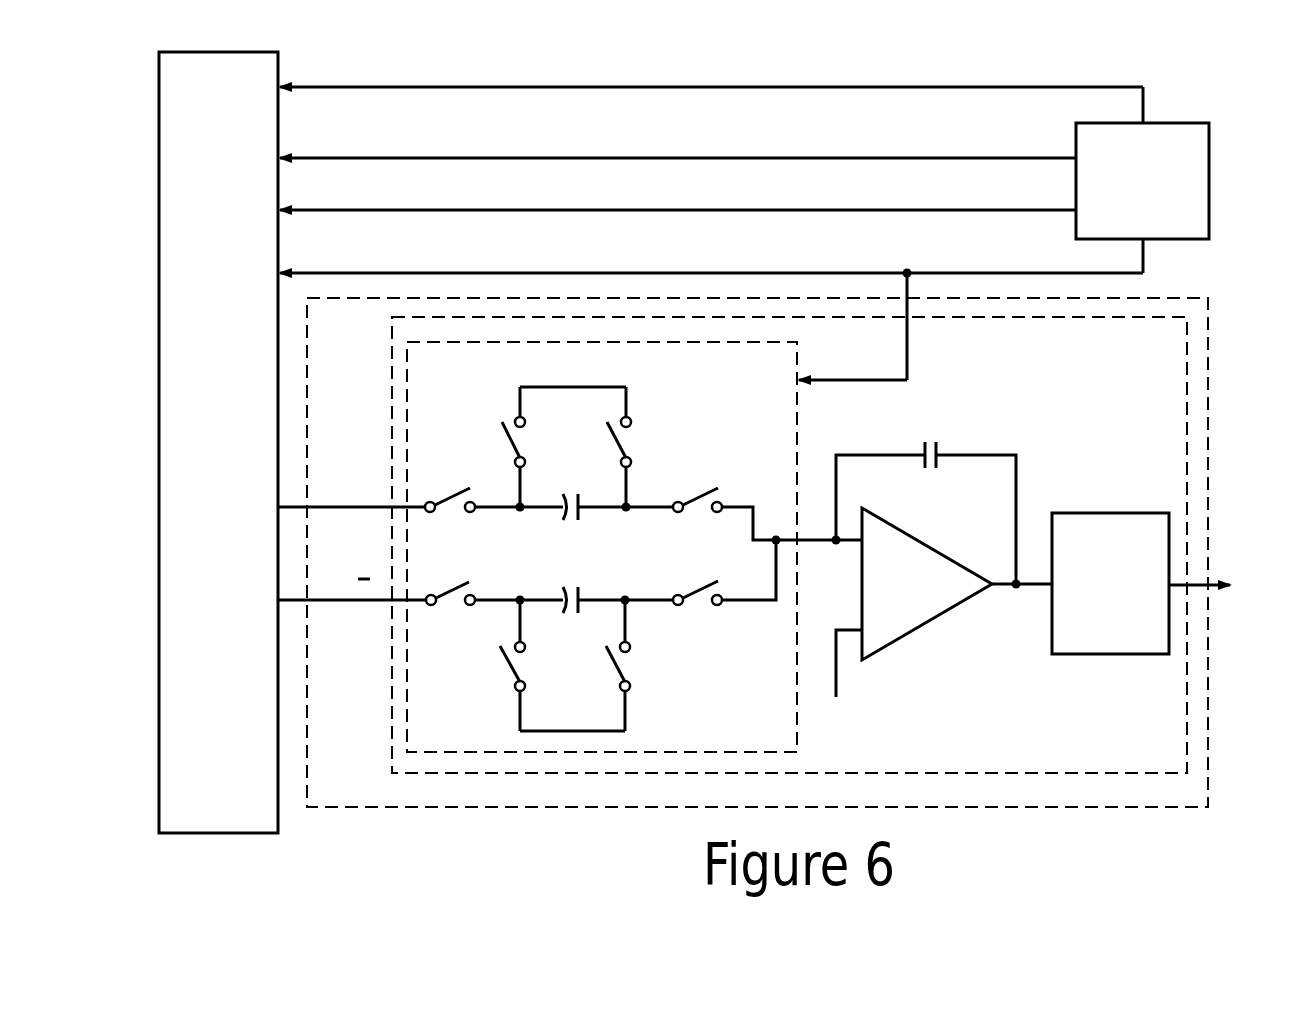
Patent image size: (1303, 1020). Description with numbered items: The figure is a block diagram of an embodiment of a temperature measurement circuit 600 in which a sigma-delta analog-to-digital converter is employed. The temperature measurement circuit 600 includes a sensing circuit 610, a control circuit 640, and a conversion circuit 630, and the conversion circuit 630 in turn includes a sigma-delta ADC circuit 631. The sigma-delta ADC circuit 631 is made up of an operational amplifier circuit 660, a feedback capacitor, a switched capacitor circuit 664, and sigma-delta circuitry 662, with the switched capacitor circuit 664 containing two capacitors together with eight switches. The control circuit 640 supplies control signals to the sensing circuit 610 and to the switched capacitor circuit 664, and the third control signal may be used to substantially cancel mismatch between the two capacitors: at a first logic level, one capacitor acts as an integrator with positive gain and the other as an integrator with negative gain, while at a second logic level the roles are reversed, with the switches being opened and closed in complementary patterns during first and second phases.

The temperature measurement circuit 600 is at (618, 62).
The sensing circuit 610 is at (227, 508).
The conversion circuit 630 is at (369, 353).
The sigma-delta ADC circuit 631 is at (1152, 370).
The control circuit 640 is at (1161, 224).
The operational amplifier circuit 660 is at (908, 631).
The sigma-delta circuitry 662 is at (1128, 640).
The switched capacitor circuit 664 is at (463, 387).